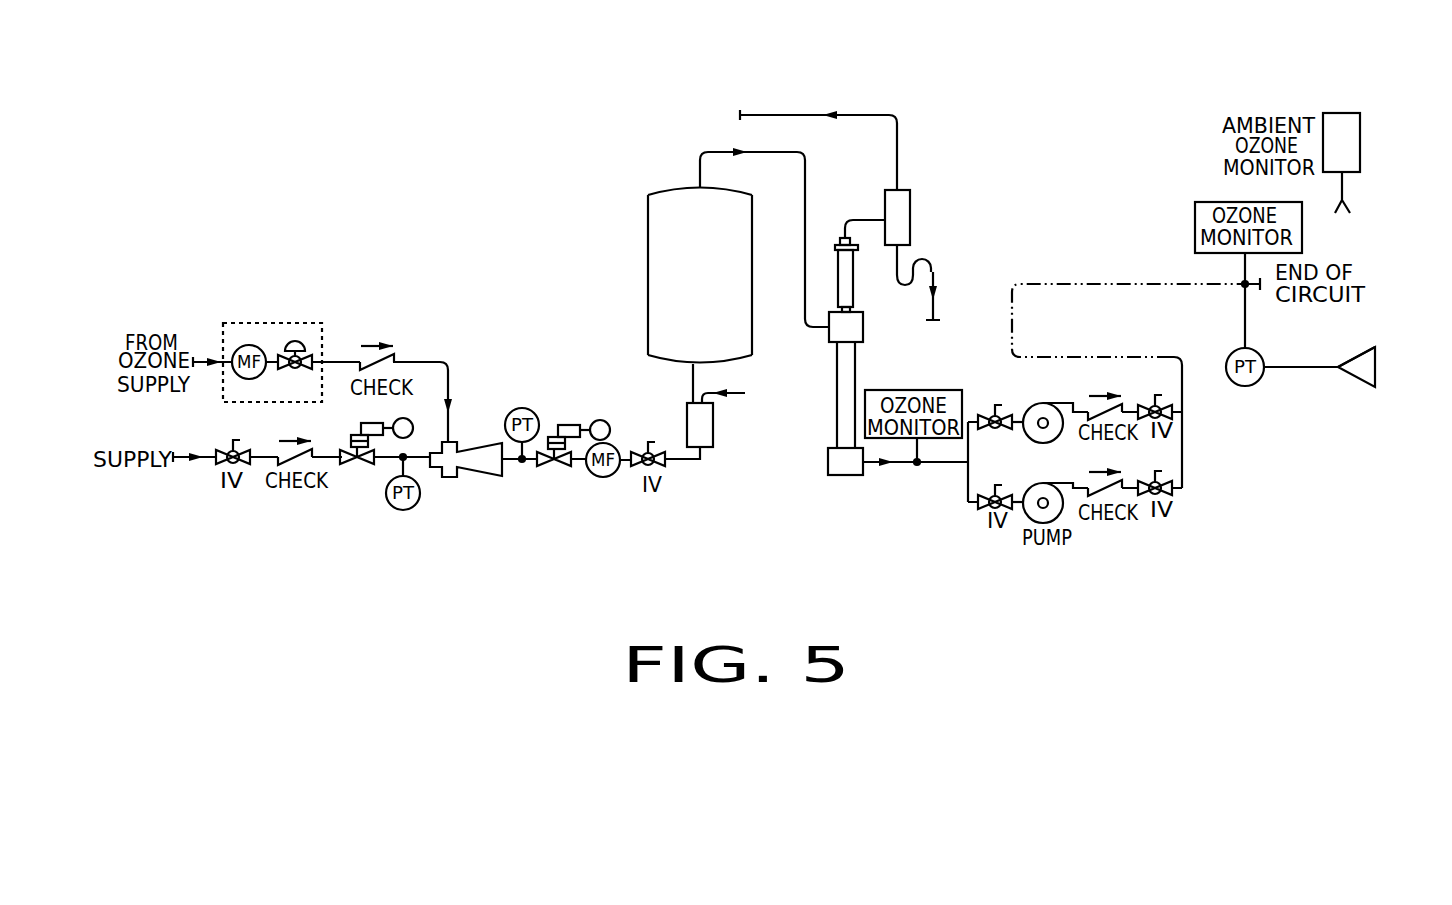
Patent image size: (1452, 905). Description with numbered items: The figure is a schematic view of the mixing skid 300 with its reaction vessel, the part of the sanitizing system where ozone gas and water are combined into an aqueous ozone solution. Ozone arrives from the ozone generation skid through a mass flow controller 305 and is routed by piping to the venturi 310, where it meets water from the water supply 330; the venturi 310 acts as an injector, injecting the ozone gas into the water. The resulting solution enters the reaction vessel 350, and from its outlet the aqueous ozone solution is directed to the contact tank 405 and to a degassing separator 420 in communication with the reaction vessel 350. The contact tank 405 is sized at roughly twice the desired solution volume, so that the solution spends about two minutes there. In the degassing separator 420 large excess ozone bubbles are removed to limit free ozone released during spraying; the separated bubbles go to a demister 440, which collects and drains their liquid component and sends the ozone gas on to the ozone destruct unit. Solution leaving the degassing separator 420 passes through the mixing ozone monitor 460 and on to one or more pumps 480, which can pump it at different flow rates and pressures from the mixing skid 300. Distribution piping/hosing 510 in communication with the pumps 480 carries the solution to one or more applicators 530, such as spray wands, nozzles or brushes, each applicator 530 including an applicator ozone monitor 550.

The mixing skid 300 is at (834, 70).
The mass flow controller 305 is at (265, 278).
The venturi 310 is at (477, 443).
The water supply 330 is at (762, 407).
The reaction vessel 350 is at (697, 422).
The contact tank 405 is at (648, 255).
The degassing separator 420 is at (828, 461).
The demister 440 is at (899, 203).
The mixing ozone monitor 460 is at (941, 463).
The pump 480 is at (1060, 403).
The distribution piping/hosing 510 is at (1313, 367).
The applicator 530 is at (1360, 373).
The applicator ozone monitor 550 is at (1373, 347).